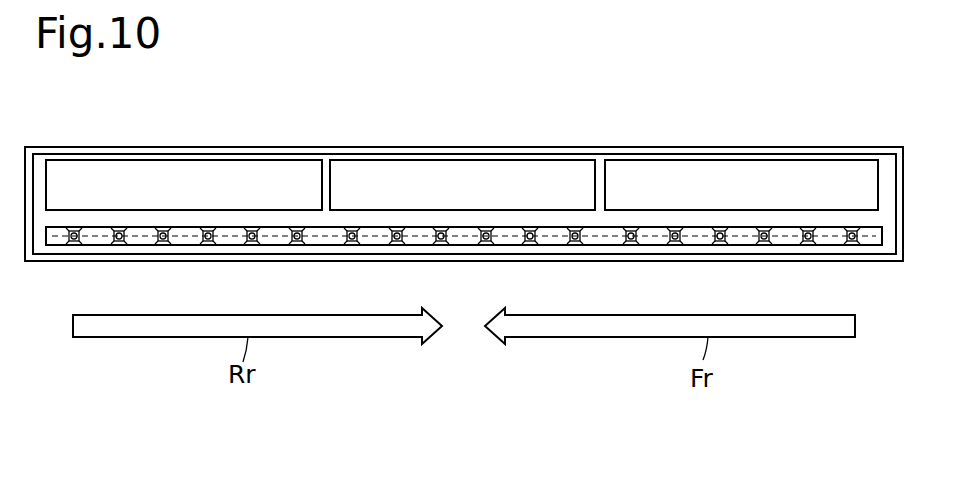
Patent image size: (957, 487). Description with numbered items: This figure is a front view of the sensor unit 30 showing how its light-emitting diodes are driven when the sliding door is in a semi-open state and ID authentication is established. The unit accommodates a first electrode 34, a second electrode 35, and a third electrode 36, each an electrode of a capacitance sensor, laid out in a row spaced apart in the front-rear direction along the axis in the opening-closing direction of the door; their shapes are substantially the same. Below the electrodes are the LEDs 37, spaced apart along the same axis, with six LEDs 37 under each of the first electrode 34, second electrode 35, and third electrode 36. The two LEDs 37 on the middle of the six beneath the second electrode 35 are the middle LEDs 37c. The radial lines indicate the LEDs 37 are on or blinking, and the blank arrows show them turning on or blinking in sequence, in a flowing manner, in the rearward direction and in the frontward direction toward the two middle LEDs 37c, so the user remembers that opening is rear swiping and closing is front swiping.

The sensor unit 30 is at (839, 92).
The first electrode 34 is at (197, 160).
The second electrode 35 is at (473, 160).
The third electrode 36 is at (745, 160).
The light-emitting diodes (LEDs) 37 is at (165, 246).
The middle LEDs 37c is at (441, 246).